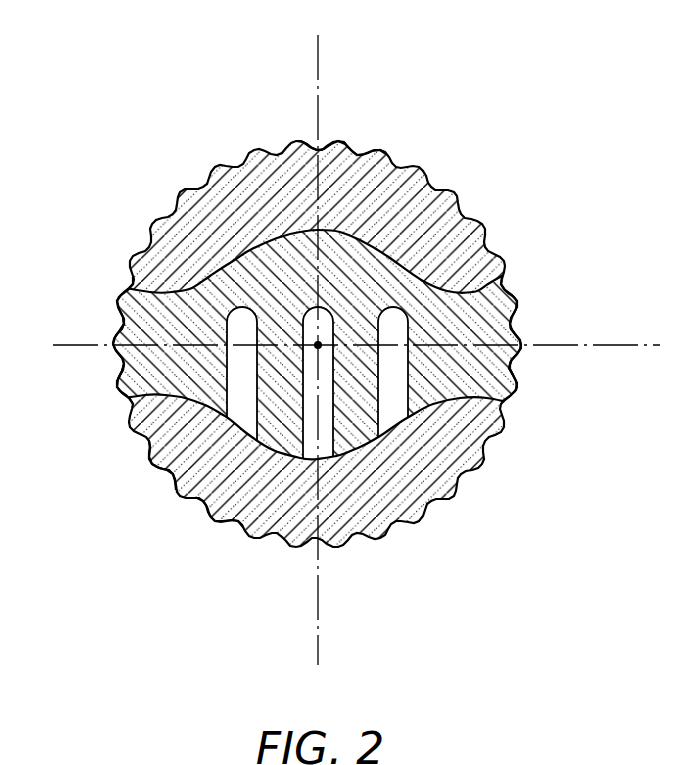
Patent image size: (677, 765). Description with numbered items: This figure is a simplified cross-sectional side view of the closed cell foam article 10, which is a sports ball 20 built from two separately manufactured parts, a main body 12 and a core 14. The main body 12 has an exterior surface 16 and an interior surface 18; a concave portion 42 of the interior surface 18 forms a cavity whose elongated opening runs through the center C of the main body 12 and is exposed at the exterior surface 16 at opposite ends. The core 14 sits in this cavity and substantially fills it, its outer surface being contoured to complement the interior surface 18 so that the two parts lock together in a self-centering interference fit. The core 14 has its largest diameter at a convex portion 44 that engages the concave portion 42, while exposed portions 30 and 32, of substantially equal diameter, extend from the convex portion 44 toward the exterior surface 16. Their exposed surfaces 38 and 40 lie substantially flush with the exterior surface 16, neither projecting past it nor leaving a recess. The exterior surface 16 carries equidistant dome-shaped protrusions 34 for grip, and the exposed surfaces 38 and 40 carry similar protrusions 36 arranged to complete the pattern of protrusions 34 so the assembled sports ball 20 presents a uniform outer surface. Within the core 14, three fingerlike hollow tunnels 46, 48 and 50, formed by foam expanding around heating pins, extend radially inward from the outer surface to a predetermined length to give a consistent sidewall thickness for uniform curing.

The article 10 is at (440, 108).
The main body 12 is at (460, 235).
The core 14 is at (450, 373).
The exterior surface 16 is at (342, 140).
The interior surface 18 is at (385, 248).
The sports ball 20 is at (258, 183).
The exposed portion 30 is at (113, 355).
The exposed portion 32 is at (518, 352).
The protrusions 34 is at (212, 521).
The protrusions 36 is at (517, 383).
The exposed surface 38 is at (115, 302).
The exposed surface 40 is at (518, 305).
The concave portion 42 is at (357, 453).
The convex portion 44 is at (268, 450).
The hollow tunnel 46 is at (157, 468).
The hollow tunnel 48 is at (313, 435).
The hollow tunnel 50 is at (390, 405).
The center C is at (318, 345).